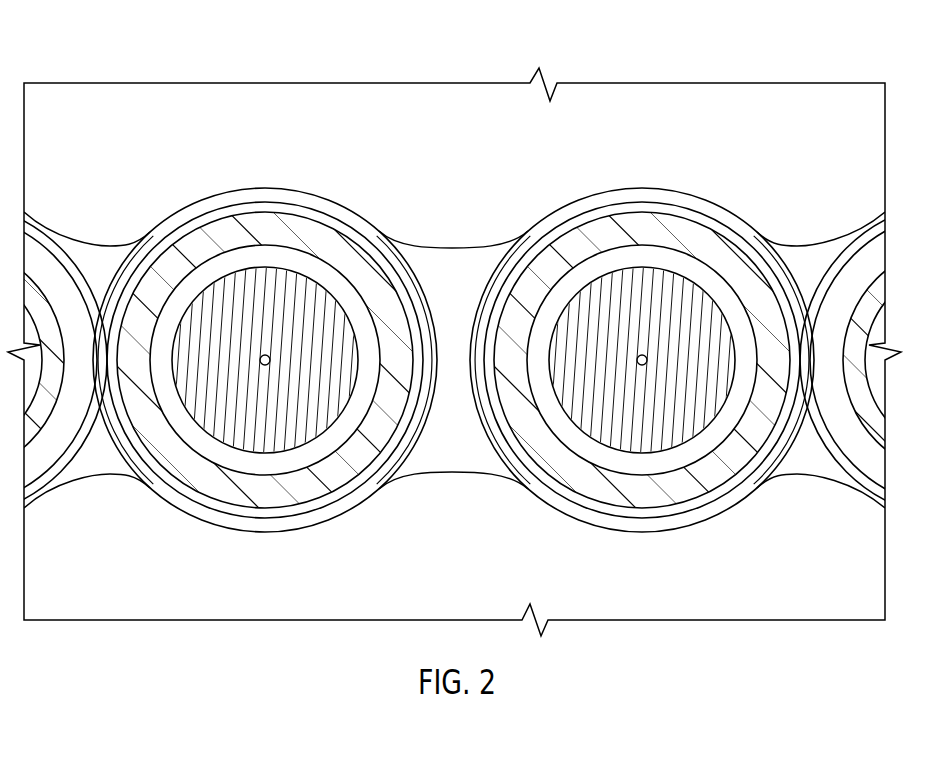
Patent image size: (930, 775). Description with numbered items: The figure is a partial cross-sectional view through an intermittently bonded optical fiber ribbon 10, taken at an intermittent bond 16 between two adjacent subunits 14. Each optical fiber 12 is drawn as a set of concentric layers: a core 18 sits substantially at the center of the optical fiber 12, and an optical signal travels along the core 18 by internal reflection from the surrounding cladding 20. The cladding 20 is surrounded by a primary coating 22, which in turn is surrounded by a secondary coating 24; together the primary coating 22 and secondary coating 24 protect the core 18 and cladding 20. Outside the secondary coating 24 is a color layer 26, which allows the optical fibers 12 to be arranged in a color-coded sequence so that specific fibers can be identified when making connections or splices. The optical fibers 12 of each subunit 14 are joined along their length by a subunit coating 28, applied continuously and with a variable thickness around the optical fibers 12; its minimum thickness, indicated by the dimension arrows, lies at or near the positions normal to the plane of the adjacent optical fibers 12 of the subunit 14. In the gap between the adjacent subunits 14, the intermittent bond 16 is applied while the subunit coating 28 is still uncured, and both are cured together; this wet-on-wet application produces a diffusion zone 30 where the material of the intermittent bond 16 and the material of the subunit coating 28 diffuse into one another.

The optical fiber ribbon 10 is at (597, 107).
The optical fiber 12 is at (43, 496).
The subunit 14 is at (103, 183).
The intermittent bond 16 is at (445, 290).
The core 18 is at (262, 366).
The cladding 20 is at (294, 414).
The primary coating 22 is at (175, 417).
The secondary coating 24 is at (369, 451).
The color layer 26 is at (323, 216).
The subunit coating 28 is at (203, 208).
The diffusion zone 30 is at (380, 232).